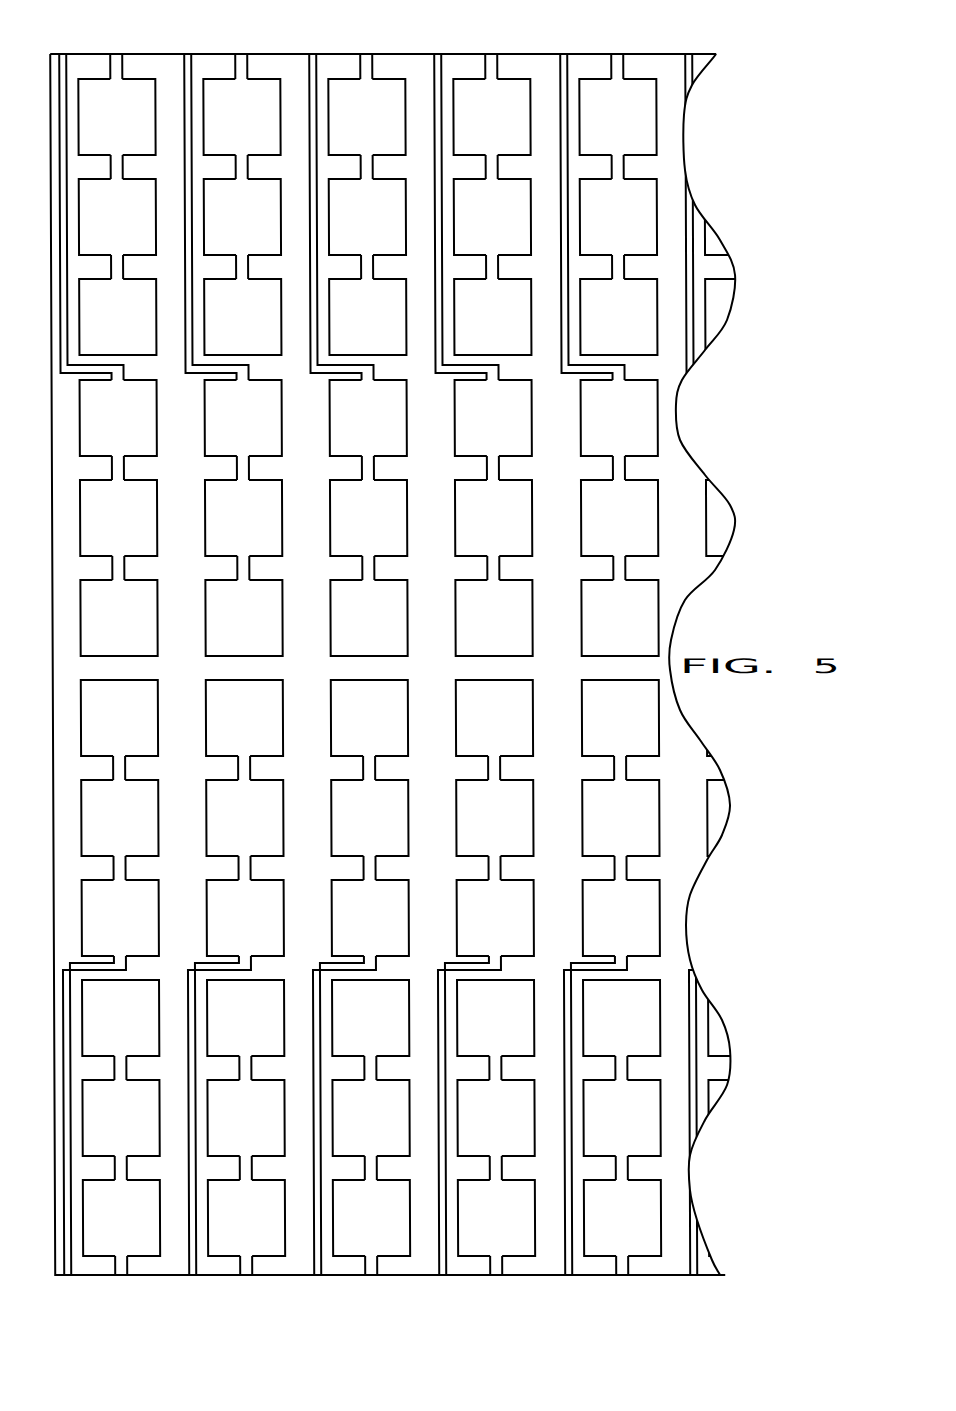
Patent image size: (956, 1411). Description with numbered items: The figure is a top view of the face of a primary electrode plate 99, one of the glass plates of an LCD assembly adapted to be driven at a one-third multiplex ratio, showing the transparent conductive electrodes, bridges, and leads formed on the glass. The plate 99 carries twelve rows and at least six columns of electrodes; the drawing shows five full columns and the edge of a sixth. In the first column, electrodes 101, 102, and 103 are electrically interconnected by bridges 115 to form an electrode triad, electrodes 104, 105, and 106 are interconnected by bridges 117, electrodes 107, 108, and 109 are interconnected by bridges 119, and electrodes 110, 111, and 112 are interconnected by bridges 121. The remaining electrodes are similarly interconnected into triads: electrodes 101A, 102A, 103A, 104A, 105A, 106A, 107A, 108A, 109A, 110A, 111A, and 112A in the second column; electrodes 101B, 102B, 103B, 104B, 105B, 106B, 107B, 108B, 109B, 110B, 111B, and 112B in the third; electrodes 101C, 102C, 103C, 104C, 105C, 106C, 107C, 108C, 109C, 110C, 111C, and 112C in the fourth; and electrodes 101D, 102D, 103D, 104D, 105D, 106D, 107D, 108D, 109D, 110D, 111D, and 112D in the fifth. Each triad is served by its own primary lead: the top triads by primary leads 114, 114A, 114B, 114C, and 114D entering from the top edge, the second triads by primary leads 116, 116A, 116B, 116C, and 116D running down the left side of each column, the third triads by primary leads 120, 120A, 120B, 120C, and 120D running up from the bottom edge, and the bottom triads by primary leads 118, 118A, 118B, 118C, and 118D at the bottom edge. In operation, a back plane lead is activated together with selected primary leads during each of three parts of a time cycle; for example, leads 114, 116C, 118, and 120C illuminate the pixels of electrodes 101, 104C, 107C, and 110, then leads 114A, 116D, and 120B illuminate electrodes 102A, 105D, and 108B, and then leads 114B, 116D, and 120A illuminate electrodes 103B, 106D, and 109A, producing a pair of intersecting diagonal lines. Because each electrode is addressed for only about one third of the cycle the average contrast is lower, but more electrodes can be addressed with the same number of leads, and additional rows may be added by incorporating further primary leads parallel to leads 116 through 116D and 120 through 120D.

The primary electrode plate 99 is at (50, 207).
The electrode 101 is at (116, 117).
The electrode 102 is at (117, 217).
The electrode 103 is at (117, 317).
The electrode 104 is at (118, 418).
The electrode 105 is at (118, 518).
The electrode 106 is at (118, 618).
The electrode 107 is at (119, 718).
The electrode 108 is at (119, 818).
The electrode 109 is at (120, 918).
The electrode 110 is at (120, 1018).
The electrode 111 is at (120, 1118).
The electrode 112 is at (121, 1218).
The electrode 101A is at (241, 117).
The electrode 102A is at (242, 217).
The electrode 103A is at (242, 317).
The electrode 104A is at (243, 418).
The electrode 105A is at (243, 518).
The electrode 106A is at (243, 618).
The electrode 107A is at (244, 718).
The electrode 108A is at (244, 818).
The electrode 109A is at (245, 918).
The electrode 110A is at (245, 1018).
The electrode 111A is at (245, 1118).
The electrode 112A is at (246, 1218).
The electrode 101B is at (366, 117).
The electrode 102B is at (367, 217).
The electrode 103B is at (367, 317).
The electrode 104B is at (368, 418).
The electrode 105B is at (368, 518).
The electrode 106B is at (368, 618).
The electrode 107B is at (369, 718).
The electrode 108B is at (369, 818).
The electrode 109B is at (370, 918).
The electrode 110B is at (370, 1018).
The electrode 111B is at (370, 1118).
The electrode 112B is at (371, 1218).
The electrode 101C is at (491, 117).
The electrode 102C is at (492, 217).
The electrode 103C is at (492, 317).
The electrode 104C is at (493, 418).
The electrode 105C is at (493, 518).
The electrode 106C is at (493, 618).
The electrode 107C is at (494, 718).
The electrode 108C is at (494, 818).
The electrode 109C is at (495, 918).
The electrode 110C is at (495, 1018).
The electrode 111C is at (495, 1118).
The electrode 112C is at (496, 1218).
The electrode 101D is at (617, 117).
The electrode 102D is at (618, 217).
The electrode 103D is at (618, 317).
The electrode 104D is at (619, 418).
The electrode 105D is at (619, 518).
The electrode 106D is at (619, 618).
The electrode 107D is at (620, 718).
The electrode 108D is at (620, 818).
The electrode 109D is at (621, 918).
The electrode 110D is at (621, 1018).
The electrode 111D is at (621, 1118).
The electrode 112D is at (622, 1218).
The primary lead 114 is at (116, 53).
The primary lead 114A is at (274, 51).
The primary lead 114B is at (398, 51).
The primary lead 114C is at (523, 51).
The primary lead 114D is at (649, 51).
The primary lead 116 is at (62, 53).
The primary lead 116A is at (219, 191).
The primary lead 116B is at (344, 191).
The primary lead 116C is at (469, 191).
The primary lead 116D is at (595, 191).
The primary lead 118 is at (122, 1264).
The primary lead 118A is at (255, 1289).
The primary lead 118B is at (379, 1289).
The primary lead 118C is at (504, 1289).
The primary lead 118D is at (630, 1289).
The primary lead 120 is at (64, 1264).
The primary lead 120A is at (211, 1139).
The primary lead 120B is at (336, 1139).
The primary lead 120C is at (461, 1139).
The primary lead 120D is at (587, 1139).
The bridges 115 is at (143, 265).
The bridges 117 is at (110, 568).
The bridges 119 is at (110, 867).
The bridges 121 is at (149, 1167).